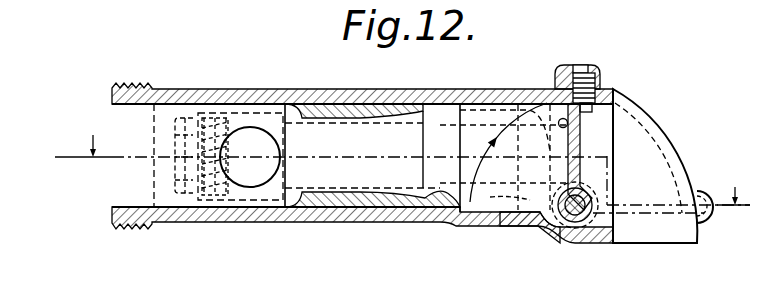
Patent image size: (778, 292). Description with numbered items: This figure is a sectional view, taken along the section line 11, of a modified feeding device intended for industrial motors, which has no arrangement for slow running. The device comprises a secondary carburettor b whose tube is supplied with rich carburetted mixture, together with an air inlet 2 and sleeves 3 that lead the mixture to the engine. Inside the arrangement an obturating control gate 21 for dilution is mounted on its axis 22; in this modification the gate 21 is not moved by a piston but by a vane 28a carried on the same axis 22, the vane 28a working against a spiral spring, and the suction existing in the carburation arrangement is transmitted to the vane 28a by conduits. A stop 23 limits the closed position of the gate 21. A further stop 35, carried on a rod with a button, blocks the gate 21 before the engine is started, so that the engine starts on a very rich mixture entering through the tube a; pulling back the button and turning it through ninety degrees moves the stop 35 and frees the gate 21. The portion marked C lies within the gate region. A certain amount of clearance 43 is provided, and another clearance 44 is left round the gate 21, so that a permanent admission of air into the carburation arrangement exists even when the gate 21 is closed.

The section line 11- 11 is at (405, 177).
The sleeve 3 is at (122, 185).
The tube a is at (378, 187).
The secondary carburettor b is at (447, 188).
The chamber C is at (597, 253).
The obturating gate 21 is at (600, 120).
The axis 22 is at (575, 222).
The clearance 44 is at (553, 230).
The stop 23 is at (600, 90).
The clearance 43 is at (575, 65).
The stop 35 is at (561, 119).
The air inlet 2 is at (580, 130).
The vane 28a is at (657, 213).